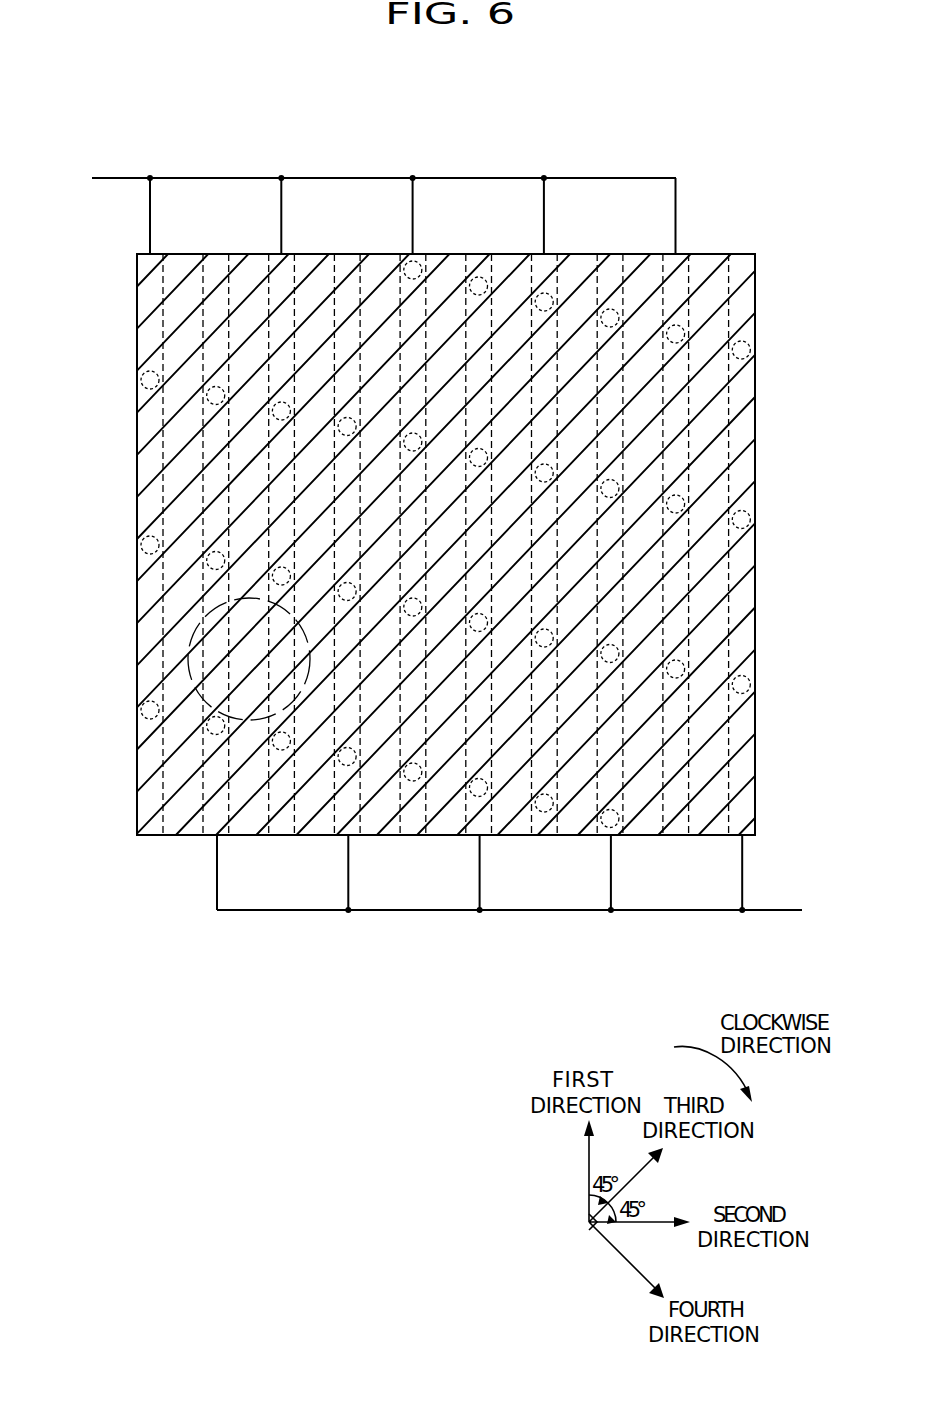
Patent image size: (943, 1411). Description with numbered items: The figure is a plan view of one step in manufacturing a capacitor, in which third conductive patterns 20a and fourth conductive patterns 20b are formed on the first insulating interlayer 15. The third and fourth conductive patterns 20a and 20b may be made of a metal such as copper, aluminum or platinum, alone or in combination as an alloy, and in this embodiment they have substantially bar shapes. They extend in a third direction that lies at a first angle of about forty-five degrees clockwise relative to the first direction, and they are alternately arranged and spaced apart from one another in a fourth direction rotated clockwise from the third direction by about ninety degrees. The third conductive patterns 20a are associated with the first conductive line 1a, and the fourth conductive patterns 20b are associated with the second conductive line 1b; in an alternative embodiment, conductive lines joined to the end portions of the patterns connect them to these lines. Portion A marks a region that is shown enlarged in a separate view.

The first conductive line 1a is at (453, 178).
The second conductive line 1b is at (533, 912).
The first insulating interlayer 15 is at (183, 803).
The third conductive patterns 20a is at (673, 837).
The fourth conductive patterns 20b is at (753, 667).
The portion "A" A is at (183, 636).